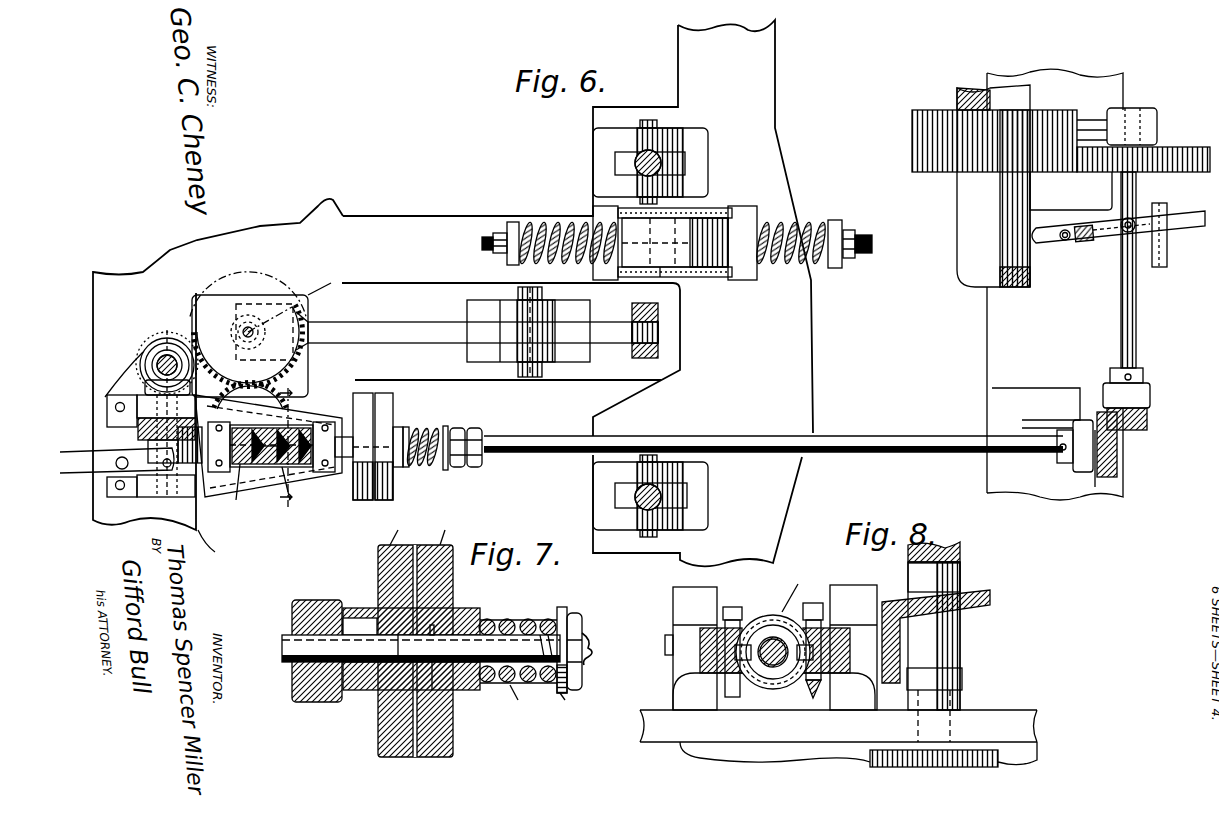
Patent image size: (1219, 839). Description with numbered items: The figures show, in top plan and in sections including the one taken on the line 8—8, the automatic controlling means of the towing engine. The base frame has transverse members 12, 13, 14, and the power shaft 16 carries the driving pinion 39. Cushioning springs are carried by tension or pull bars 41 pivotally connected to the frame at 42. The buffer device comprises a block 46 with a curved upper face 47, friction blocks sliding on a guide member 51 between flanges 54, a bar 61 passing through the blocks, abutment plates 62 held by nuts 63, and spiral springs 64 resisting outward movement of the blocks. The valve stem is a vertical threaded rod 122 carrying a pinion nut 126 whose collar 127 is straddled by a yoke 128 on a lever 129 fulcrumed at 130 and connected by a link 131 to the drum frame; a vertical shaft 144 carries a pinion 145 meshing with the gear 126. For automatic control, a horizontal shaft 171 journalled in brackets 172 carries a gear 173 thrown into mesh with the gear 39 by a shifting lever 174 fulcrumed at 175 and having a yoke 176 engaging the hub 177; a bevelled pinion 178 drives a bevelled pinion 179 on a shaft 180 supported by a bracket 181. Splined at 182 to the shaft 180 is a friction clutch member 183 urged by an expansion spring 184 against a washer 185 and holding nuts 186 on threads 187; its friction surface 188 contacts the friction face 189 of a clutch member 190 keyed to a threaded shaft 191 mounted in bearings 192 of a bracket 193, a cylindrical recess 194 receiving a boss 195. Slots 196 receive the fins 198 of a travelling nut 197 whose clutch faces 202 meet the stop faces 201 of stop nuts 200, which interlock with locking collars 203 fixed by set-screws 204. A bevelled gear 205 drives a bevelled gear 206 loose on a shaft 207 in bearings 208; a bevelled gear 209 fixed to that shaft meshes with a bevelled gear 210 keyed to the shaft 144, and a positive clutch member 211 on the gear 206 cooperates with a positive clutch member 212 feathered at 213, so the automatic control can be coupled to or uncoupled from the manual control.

In FIG. 6, the section line 8— 8 is at (279, 446).
In FIG. 6, the transverse member 12 is at (96, 274).
In FIG. 8, the transverse member 12 is at (995, 718).
In FIG. 6, the transverse member 13 is at (792, 333).
In FIG. 6, the transverse member 14 is at (1125, 485).
In FIG. 6, the power shaft 16 is at (960, 226).
In FIG. 6, the driving pinion 39 is at (912, 141).
In FIG. 6, the tension or pull bar 41 is at (660, 163).
In FIG. 6, the pivotal connection 42 is at (655, 122).
In FIG. 6, the buffer block 46 is at (668, 277).
In FIG. 6, the curved upper face 47 is at (680, 232).
In FIG. 6, the guide member 51 is at (745, 280).
In FIG. 6, the flanges 54 is at (625, 210).
In FIG. 6, the bar 61 is at (775, 222).
In FIG. 6, the abutment plate 62 is at (508, 222).
In FIG. 6, the nuts 63 is at (488, 252).
In FIG. 6, the spiral spring 64 is at (552, 222).
In FIG. 6, the vertical threaded rod 122 is at (242, 330).
In FIG. 6, the pinion nut 126 is at (308, 300).
In FIG. 6, the collar 127 is at (300, 300).
In FIG. 6, the yoke 128 is at (283, 290).
In FIG. 6, the lever 129 is at (440, 310).
In FIG. 6, the fulcrum 130 is at (542, 370).
In FIG. 6, the link 131 is at (658, 348).
In FIG. 6, the vertical shaft 144 is at (238, 342).
In FIG. 8, the vertical shaft 144 is at (962, 650).
In FIG. 6, the pinion 145 is at (140, 345).
In FIG. 8, the pinion 145 is at (1000, 765).
In FIG. 6, the horizontal shaft 171 is at (1137, 330).
In FIG. 6, the brackets 172 is at (1157, 112).
In FIG. 6, the gear 173 is at (1165, 172).
In FIG. 6, the shifting lever 174 is at (1195, 220).
In FIG. 6, the fulcrum 175 is at (1065, 242).
In FIG. 6, the yoke 176 is at (1090, 245).
In FIG. 6, the hub 177 is at (1120, 218).
In FIG. 6, the bevelled pinion 178 is at (1120, 425).
In FIG. 6, the bevelled pinion 179 is at (1105, 478).
In FIG. 6, the shaft 180 is at (930, 428).
In FIG. 7, the shaft 180 is at (526, 697).
In FIG. 6, the bracket 181 is at (1080, 472).
In FIG. 7, the spline 182 is at (500, 618).
In FIG. 6, the friction clutch member 183 is at (400, 430).
In FIG. 7, the friction clutch member 183 is at (455, 592).
In FIG. 6, the expansion spring 184 is at (445, 470).
In FIG. 7, the expansion spring 184 is at (560, 607).
In FIG. 6, the washer 185 is at (455, 428).
In FIG. 7, the washer 185 is at (582, 625).
In FIG. 6, the holding nuts 186 is at (483, 440).
In FIG. 7, the holding nuts 186 is at (581, 694).
In FIG. 7, the threads 187 is at (592, 660).
In FIG. 7, the friction surface 188 is at (448, 528).
In FIG. 7, the friction face 189 is at (396, 531).
In FIG. 7, the friction clutch member 190 is at (380, 580).
In FIG. 7, the threaded shaft 191 is at (295, 665).
In FIG. 8, the threaded shaft 191 is at (770, 668).
In FIG. 6, the bearings 192 is at (245, 500).
In FIG. 7, the bearings 192 is at (305, 598).
In FIG. 8, the bearings 192 is at (799, 582).
In FIG. 6, the bracket 193 is at (217, 548).
In FIG. 8, the bracket 193 is at (665, 647).
In FIG. 7, the cylindrical recess 194 is at (432, 662).
In FIG. 7, the cylindrical boss 195 is at (432, 690).
In FIG. 6, the slots 196 is at (275, 400).
In FIG. 8, the slots 196 is at (760, 598).
In FIG. 6, the travelling nut 197 is at (310, 420).
In FIG. 8, the travelling nut 197 is at (780, 680).
In FIG. 6, the fins 198 is at (307, 495).
In FIG. 8, the fins 198 is at (710, 673).
In FIG. 6, the stop nuts 200 is at (255, 410).
In FIG. 6, the clutch or stop faces 201 is at (298, 425).
In FIG. 6, the clutch faces 202 is at (270, 467).
In FIG. 6, the locking collars 203 is at (250, 470).
In FIG. 6, the set-screws 204 is at (385, 497).
In FIG. 6, the bevelled gear 205 is at (175, 497).
In FIG. 6, the bevelled gear 206 is at (140, 402).
In FIG. 8, the bevelled gear 206 is at (835, 586).
In FIG. 6, the shaft 207 is at (150, 478).
In FIG. 8, the shaft 207 is at (962, 668).
In FIG. 6, the bearings 208 is at (120, 400).
In FIG. 8, the bearings 208 is at (675, 600).
In FIG. 6, the bevelled gear 209 is at (150, 350).
In FIG. 8, the bevelled gear 209 is at (962, 625).
In FIG. 6, the bevelled gear 210 is at (168, 355).
In FIG. 8, the bevelled gear 210 is at (975, 598).
In FIG. 6, the positive clutch member 211 is at (138, 435).
In FIG. 6, the positive clutch member 212 is at (150, 465).
In FIG. 6, the feather 213 is at (404, 448).